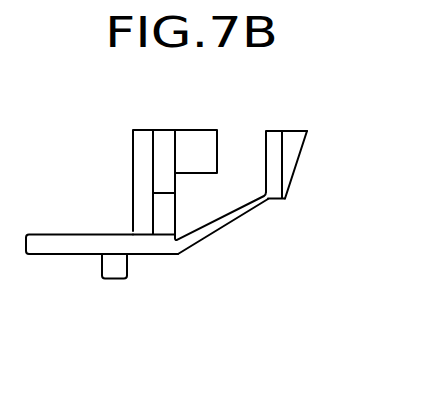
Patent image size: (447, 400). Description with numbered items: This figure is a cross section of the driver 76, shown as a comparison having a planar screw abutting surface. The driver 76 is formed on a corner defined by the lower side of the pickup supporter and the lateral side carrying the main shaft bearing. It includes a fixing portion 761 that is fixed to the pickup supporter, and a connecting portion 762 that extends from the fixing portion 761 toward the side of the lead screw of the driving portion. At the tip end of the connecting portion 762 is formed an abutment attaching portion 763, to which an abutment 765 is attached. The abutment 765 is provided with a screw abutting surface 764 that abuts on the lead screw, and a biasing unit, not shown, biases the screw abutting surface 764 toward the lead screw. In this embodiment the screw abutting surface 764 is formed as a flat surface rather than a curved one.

The driver 76 is at (83, 228).
The fixing portion 761 is at (47, 248).
The connecting portion 762 is at (232, 218).
The abutment attaching portion 763 is at (267, 142).
The screw abutting surface 764 is at (305, 147).
The abutment 765 is at (302, 130).